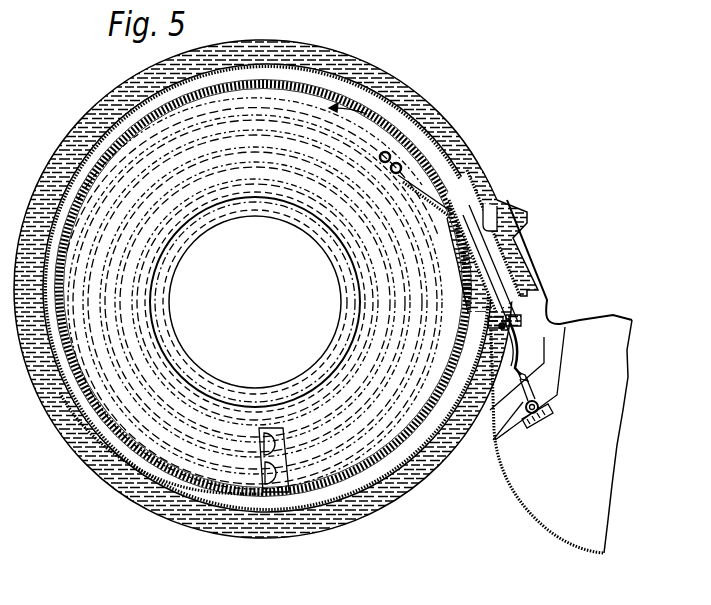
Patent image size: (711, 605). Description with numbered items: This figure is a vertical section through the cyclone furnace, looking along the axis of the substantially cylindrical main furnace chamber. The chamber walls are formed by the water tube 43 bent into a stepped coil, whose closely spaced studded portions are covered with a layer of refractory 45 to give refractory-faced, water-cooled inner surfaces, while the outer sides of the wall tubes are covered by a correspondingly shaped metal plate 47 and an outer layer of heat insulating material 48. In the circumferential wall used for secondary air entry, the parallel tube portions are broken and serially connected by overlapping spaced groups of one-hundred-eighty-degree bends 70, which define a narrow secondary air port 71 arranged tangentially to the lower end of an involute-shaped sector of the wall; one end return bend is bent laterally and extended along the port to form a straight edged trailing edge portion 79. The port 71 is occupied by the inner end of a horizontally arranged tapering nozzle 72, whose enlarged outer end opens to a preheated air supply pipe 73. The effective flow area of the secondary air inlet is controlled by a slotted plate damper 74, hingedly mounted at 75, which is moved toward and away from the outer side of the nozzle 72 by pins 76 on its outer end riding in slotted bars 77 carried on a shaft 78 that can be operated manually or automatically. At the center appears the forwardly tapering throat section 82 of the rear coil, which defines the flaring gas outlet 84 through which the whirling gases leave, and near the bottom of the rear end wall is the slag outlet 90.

The water tube 43 is at (180, 487).
The refractory layer 45 is at (209, 495).
The metal plate 47 is at (130, 473).
The heat insulating material 48 is at (77, 447).
The 180° bends 70 is at (491, 218).
The secondary air port 71 is at (428, 178).
The tapering nozzle 72 is at (507, 262).
The preheated air supply pipe 73 is at (614, 317).
The slotted plate damper 74 is at (544, 337).
The hinge mounting 75 is at (503, 322).
The pins 76 is at (530, 378).
The slotted bars 77 is at (539, 393).
The shaft 78 is at (495, 440).
The straight edged trailing edge portion 79 is at (389, 154).
The throat section 82 is at (255, 302).
The gas outlet 84 is at (268, 312).
The slag outlet 90 is at (277, 493).